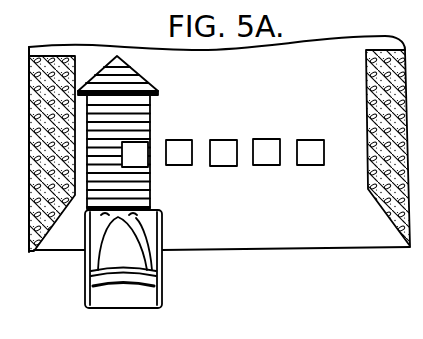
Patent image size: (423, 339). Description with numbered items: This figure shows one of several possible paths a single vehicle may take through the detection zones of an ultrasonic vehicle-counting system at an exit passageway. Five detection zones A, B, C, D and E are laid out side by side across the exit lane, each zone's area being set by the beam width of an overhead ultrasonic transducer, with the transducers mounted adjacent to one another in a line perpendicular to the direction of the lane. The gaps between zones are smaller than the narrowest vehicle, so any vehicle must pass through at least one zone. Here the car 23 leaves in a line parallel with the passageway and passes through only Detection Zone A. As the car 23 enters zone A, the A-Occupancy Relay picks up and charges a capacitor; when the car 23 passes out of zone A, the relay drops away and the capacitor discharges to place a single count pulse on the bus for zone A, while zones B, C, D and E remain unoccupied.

The car 23 is at (162, 269).
The Detection Zone A is at (135, 154).
The Detection Zone B is at (179, 152).
The Detection Zone C is at (223, 153).
The Detection Zone D is at (266, 152).
The Detection Zone E is at (310, 152).